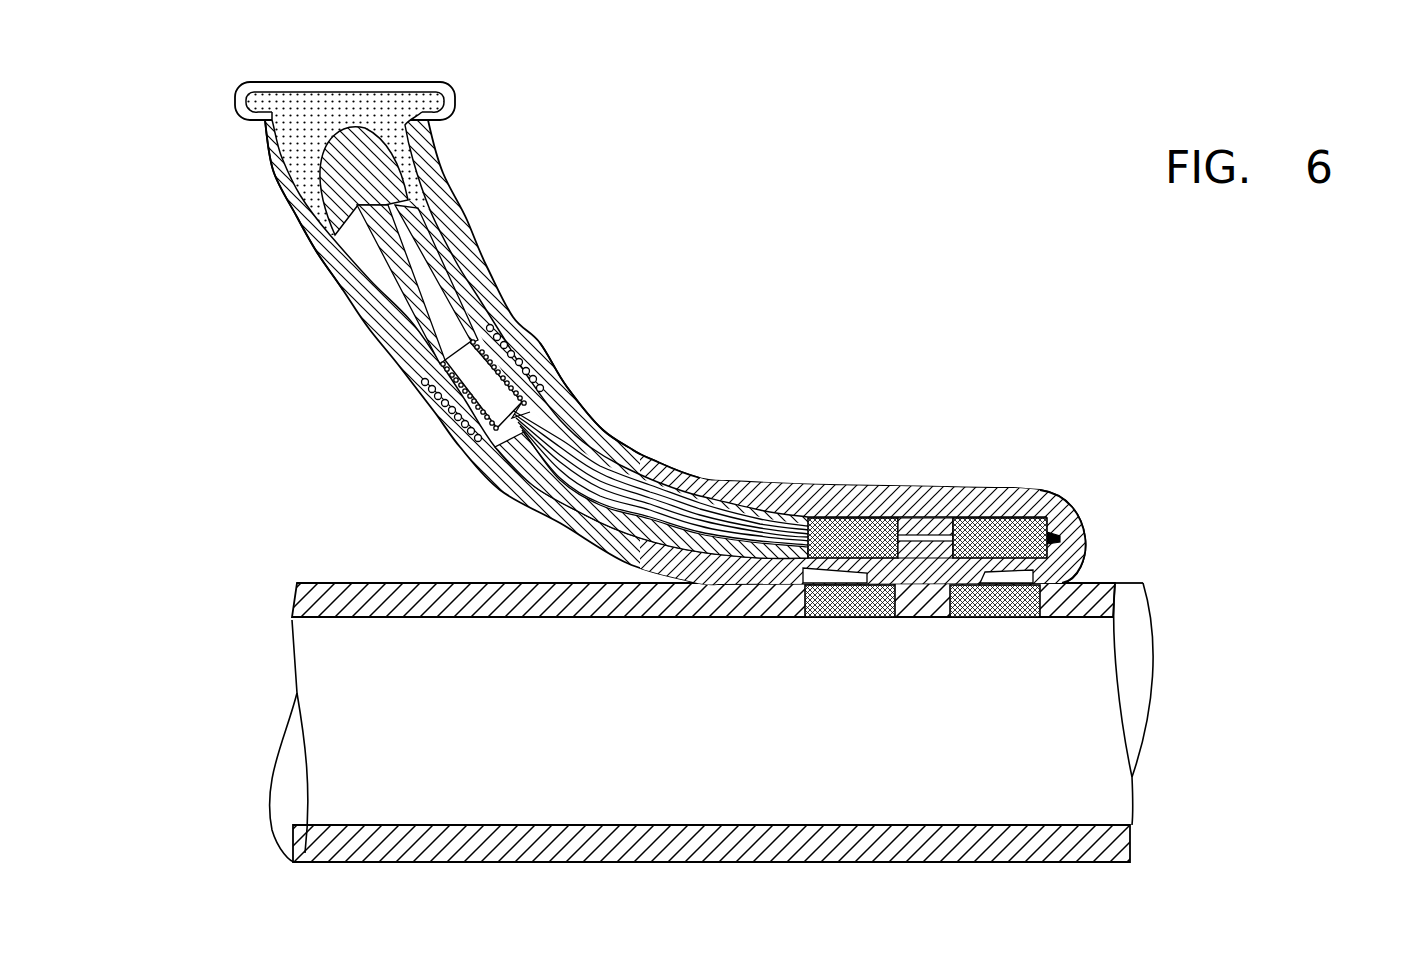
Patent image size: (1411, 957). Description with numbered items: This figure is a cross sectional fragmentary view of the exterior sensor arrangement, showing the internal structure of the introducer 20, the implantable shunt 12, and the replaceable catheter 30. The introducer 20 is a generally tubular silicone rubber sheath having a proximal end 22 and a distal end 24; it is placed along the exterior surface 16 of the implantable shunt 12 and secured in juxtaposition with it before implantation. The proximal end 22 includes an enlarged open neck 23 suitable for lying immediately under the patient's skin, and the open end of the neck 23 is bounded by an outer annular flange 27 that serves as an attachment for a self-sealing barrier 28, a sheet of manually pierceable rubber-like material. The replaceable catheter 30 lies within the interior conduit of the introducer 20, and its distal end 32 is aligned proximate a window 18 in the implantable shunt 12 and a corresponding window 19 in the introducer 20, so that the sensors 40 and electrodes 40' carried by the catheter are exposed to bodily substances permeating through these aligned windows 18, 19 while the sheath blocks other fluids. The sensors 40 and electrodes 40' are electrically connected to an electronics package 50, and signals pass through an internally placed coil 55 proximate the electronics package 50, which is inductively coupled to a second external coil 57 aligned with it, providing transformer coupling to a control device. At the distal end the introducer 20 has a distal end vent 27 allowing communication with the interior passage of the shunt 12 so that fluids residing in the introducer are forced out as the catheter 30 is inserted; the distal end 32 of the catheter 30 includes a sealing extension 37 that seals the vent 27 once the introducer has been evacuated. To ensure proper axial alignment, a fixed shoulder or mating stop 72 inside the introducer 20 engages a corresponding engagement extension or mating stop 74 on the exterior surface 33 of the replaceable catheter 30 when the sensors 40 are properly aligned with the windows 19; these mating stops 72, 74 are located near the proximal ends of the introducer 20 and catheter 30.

The implantable shunt 12 is at (407, 583).
The exterior surface 16 is at (871, 486).
The window 18 is at (870, 622).
The window 19 is at (805, 598).
The introducer 20 is at (937, 486).
The proximal end 22 is at (693, 345).
The open neck 23 is at (300, 230).
The distal end 24 is at (1047, 535).
The outer annular flange / distal end vent 27 is at (453, 103).
The self-sealing barrier 28 is at (290, 100).
The replaceable catheter 30 is at (590, 436).
The distal end 32 is at (1103, 585).
The exterior surface 33 is at (466, 226).
The sealing extension 37 is at (1050, 535).
The sensor 40 is at (1000, 474).
The electrode 40' is at (847, 466).
The electronics package 50 is at (527, 390).
The internally placed coil 55 is at (512, 330).
The second external coil 57 is at (524, 364).
The mating stop 72 is at (425, 172).
The mating stop 74 is at (390, 168).